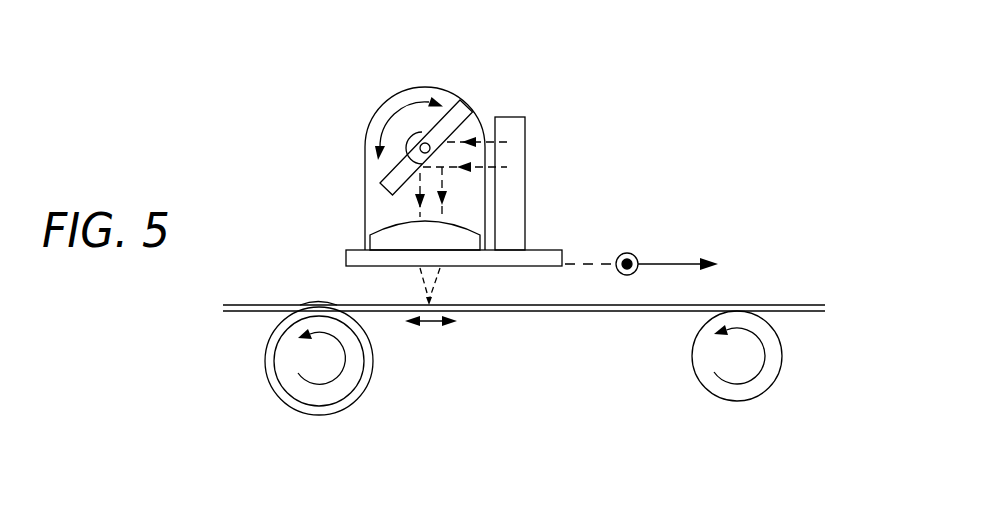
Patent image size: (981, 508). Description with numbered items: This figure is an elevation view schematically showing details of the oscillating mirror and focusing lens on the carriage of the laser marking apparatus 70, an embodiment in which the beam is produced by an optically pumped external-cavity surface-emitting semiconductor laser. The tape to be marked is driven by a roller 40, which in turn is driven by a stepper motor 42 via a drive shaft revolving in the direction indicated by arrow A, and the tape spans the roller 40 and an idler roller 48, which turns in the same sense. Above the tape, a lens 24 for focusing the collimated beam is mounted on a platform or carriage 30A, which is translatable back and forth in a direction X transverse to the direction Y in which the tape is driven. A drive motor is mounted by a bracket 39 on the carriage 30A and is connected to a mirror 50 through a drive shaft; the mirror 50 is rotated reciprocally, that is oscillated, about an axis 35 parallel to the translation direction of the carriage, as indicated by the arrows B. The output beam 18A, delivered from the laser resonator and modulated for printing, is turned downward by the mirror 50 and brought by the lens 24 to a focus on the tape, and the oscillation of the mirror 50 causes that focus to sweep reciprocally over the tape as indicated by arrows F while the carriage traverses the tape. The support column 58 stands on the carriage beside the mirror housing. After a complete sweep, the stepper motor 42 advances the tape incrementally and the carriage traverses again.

The laser marking apparatus 70 is at (240, 113).
The axis 35 is at (383, 103).
The bracket 39 is at (382, 126).
The mirror 50 is at (390, 162).
The lens 24 is at (393, 230).
The support column 58 is at (516, 150).
The carriage platform 30A is at (556, 234).
The beam 18A is at (384, 288).
The stepper motor 42 is at (267, 342).
The roller 40 is at (347, 375).
The idler roller 48 is at (772, 367).